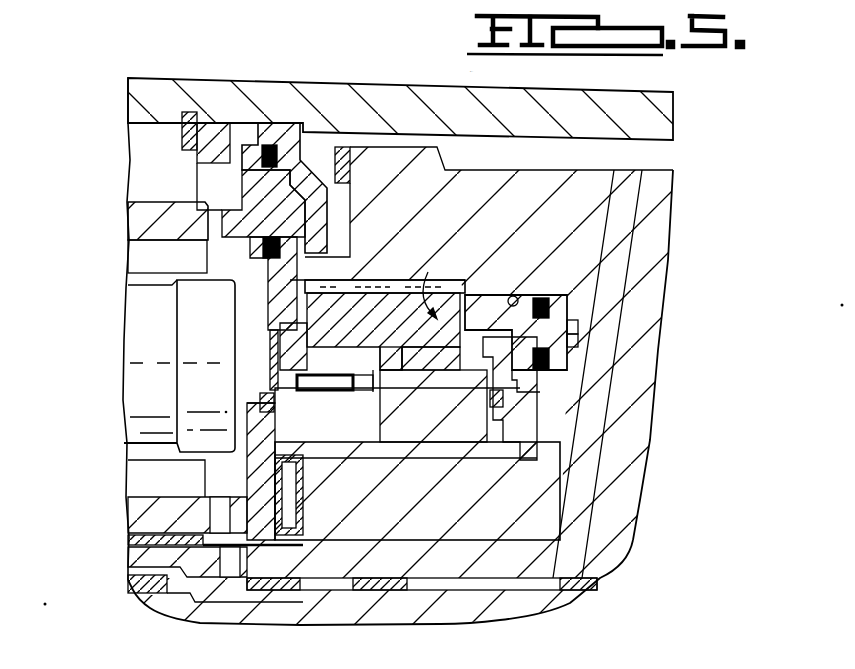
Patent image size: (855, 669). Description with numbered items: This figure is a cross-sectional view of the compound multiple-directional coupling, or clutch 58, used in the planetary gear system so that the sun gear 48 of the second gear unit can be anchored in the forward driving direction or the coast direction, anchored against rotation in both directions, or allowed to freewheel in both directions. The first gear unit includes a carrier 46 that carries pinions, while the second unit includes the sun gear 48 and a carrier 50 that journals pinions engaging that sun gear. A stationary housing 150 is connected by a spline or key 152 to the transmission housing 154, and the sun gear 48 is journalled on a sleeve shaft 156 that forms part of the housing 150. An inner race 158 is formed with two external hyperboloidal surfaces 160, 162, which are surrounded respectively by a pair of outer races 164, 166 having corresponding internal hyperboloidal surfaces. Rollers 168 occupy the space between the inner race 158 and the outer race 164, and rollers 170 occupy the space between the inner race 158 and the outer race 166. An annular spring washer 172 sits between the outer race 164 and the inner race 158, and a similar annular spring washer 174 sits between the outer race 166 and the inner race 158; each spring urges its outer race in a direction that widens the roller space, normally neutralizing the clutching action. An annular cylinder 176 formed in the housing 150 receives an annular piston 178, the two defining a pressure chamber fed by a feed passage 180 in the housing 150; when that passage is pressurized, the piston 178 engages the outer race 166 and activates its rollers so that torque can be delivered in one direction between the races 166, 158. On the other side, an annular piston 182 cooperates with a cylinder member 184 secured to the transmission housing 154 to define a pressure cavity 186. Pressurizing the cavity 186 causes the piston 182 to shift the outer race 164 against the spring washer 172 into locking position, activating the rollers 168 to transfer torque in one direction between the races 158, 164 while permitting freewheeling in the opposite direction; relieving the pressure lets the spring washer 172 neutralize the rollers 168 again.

The carrier 46 is at (133, 213).
The sun gear 48 is at (133, 473).
The carrier 50 is at (150, 337).
The clutch 58 is at (462, 278).
The stationary housing 150 is at (530, 537).
The spline or key 152 is at (393, 140).
The transmission housing 154 is at (330, 100).
The sleeve shaft 156 is at (133, 553).
The inner race 158 is at (377, 430).
The external hyperboloidal surface 160 is at (320, 395).
The external hyperboloidal surface 162 is at (490, 397).
The outer race 164 is at (333, 322).
The outer race 166 is at (435, 357).
The rollers 168 is at (300, 378).
The rollers 170 is at (448, 392).
The annular spring washer 172 is at (367, 347).
The annular spring washer 174 is at (431, 281).
The annular cylinder 176 is at (513, 295).
The annular piston 178 is at (580, 338).
The feed passage 180 is at (580, 330).
The annular piston 182 is at (270, 285).
The cylinder member 184 is at (215, 133).
The pressure cavity 186 is at (258, 193).